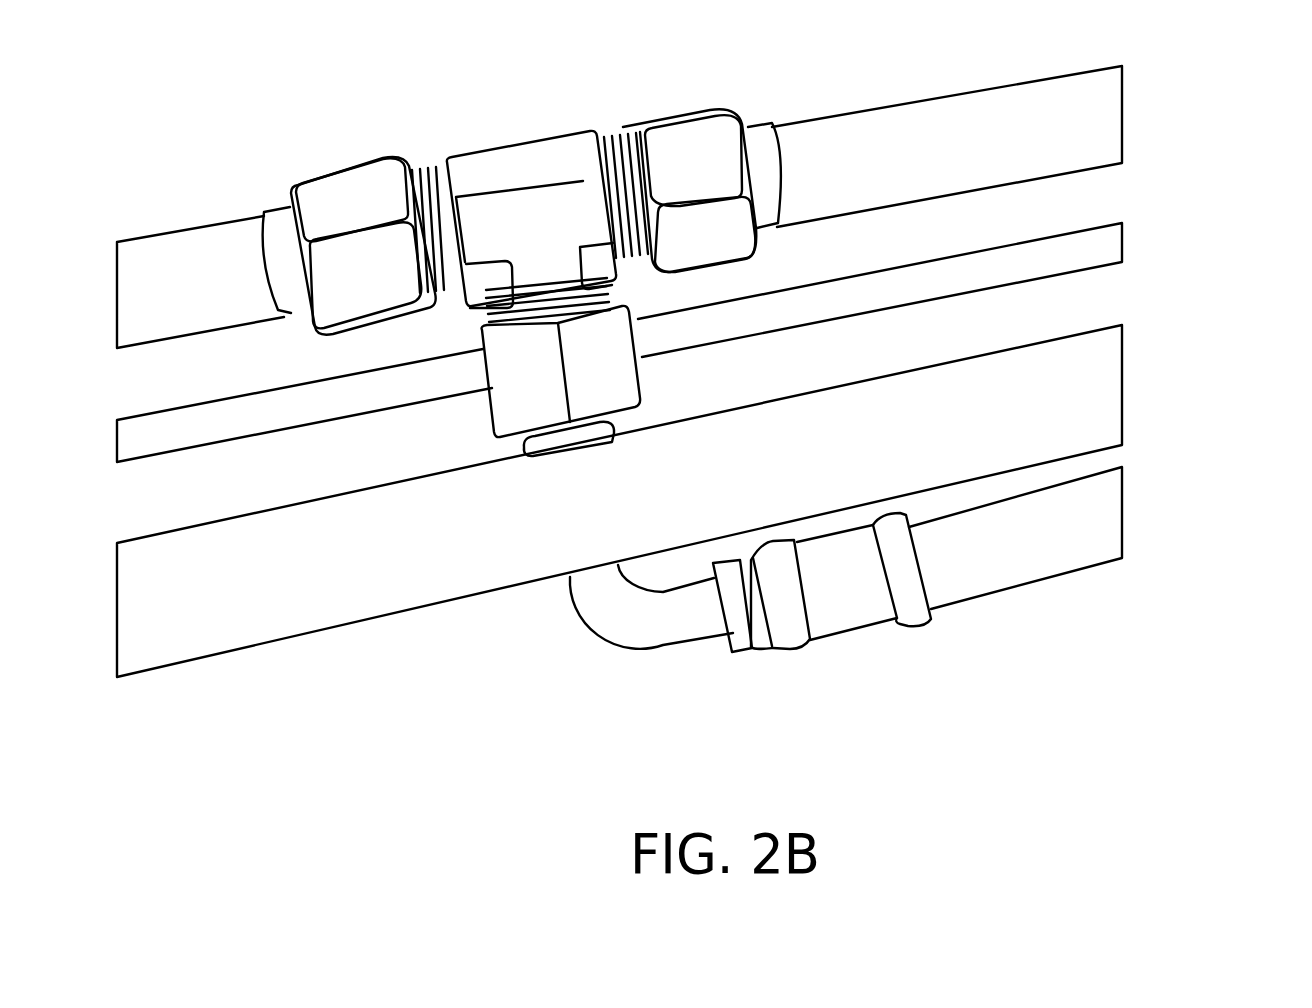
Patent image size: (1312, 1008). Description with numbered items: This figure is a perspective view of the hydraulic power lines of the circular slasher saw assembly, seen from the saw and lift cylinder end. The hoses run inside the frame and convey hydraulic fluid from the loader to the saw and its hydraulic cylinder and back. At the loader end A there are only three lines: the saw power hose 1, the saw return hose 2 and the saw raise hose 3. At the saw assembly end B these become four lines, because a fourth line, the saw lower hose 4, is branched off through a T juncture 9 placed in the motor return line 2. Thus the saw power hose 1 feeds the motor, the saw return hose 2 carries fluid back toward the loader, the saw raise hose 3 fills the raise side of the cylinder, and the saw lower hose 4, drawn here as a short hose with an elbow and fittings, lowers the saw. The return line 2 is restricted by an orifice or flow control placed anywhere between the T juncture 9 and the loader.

The saw power hose/line 1 is at (1110, 398).
The saw return hose/line 2 is at (1090, 117).
The saw raise hose/line 3 is at (1108, 248).
The saw lower hose/line 4 is at (1115, 527).
The T juncture 9 is at (550, 197).
The loader end A is at (117, 693).
The saw assembly end B is at (1217, 48).